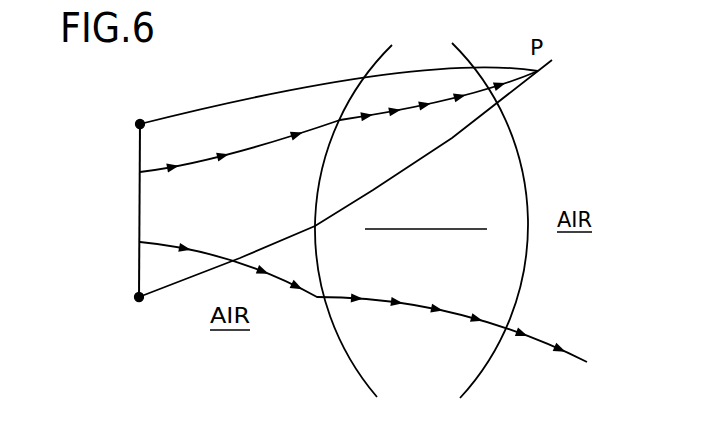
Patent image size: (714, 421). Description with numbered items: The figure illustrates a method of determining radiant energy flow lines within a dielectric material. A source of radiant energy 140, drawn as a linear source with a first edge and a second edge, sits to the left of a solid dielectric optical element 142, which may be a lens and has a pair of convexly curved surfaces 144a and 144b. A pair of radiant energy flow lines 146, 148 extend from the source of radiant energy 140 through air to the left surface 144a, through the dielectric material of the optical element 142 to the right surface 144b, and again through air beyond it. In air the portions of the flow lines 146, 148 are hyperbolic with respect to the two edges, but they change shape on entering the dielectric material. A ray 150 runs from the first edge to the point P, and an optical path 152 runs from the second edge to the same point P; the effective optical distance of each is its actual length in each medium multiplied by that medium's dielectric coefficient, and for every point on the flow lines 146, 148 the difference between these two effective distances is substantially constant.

The source of radiant energy 140 is at (128, 203).
The solid dielectric optical element 142 is at (436, 226).
The left surface 144a is at (345, 364).
The right surface 144b is at (498, 369).
The radiant energy flow line 146 is at (200, 163).
The radiant energy flow line 148 is at (207, 250).
The ray 150 is at (262, 94).
The optical path 152 is at (447, 142).